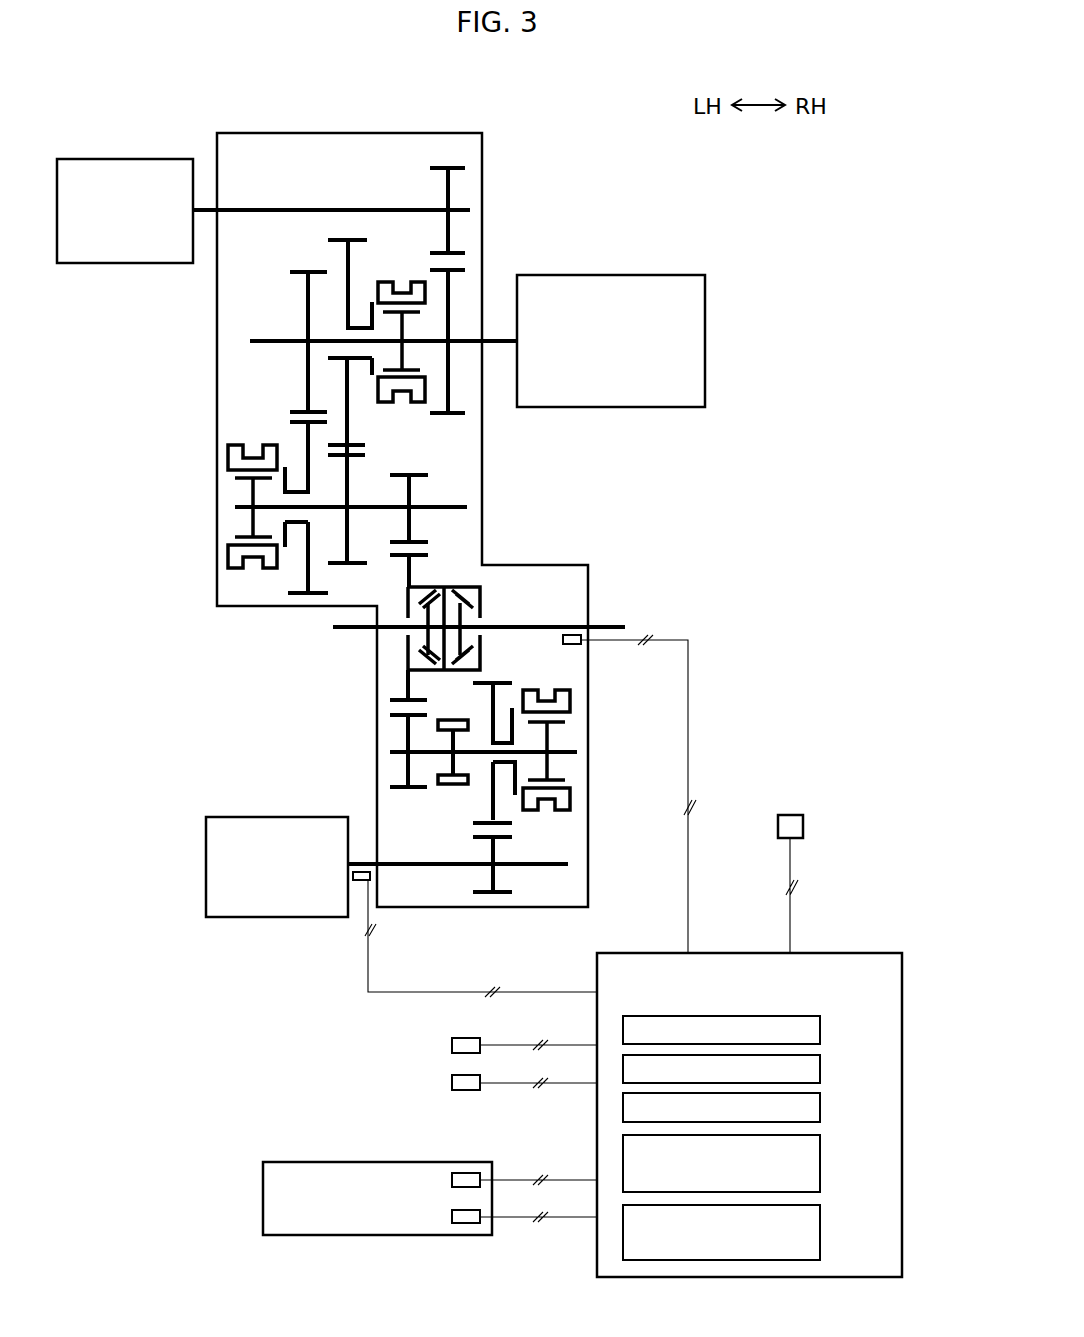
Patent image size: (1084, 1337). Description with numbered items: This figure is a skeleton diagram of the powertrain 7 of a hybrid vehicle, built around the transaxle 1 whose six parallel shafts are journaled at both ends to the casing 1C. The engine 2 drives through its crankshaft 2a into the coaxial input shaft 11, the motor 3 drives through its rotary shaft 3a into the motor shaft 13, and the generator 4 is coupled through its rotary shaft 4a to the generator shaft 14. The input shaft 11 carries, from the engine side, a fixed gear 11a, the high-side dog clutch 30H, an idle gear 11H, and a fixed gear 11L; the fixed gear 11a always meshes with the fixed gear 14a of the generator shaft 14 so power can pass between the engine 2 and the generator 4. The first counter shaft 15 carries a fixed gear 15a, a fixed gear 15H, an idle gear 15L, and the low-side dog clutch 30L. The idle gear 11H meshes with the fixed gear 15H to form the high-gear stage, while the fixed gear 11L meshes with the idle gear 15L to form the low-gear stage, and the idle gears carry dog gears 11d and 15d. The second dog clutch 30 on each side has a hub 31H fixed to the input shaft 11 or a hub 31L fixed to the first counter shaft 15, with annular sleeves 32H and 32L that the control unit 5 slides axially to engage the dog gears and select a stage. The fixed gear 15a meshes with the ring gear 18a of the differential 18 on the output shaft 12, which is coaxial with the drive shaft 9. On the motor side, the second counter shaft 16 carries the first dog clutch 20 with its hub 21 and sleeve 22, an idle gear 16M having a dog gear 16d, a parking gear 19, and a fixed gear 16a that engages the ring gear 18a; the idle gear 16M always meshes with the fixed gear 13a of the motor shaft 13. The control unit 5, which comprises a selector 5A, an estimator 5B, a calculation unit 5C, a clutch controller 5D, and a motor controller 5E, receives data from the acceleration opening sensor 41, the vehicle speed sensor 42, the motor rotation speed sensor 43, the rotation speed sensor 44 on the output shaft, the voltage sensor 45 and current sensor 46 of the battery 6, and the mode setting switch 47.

The transaxle 1 is at (590, 485).
The casing 1C is at (241, 132).
The engine 2 is at (707, 341).
The crankshaft 2a is at (492, 345).
The motor 3 is at (247, 816).
The rotary shaft of the motor 3a is at (353, 858).
The generator 4 is at (103, 158).
The rotary shaft of the generator 4a is at (203, 208).
The control unit 5 is at (771, 1115).
The selector 5A is at (822, 1031).
The estimator 5B is at (822, 1069).
The calculation unit 5C is at (822, 1108).
The clutch controller 5D is at (822, 1164).
The motor controller 5E is at (822, 1233).
The battery 6 is at (290, 1161).
The powertrain 7 is at (661, 197).
The drive shaft 9 is at (607, 622).
The input shaft 11 is at (255, 339).
The idle gear 11H is at (347, 258).
The fixed gear 11L is at (307, 374).
The fixed gear 11a is at (455, 394).
The dog gear 11d is at (364, 377).
The output shaft 12 is at (557, 626).
The motor shaft 13 is at (430, 866).
The fixed gear 13a is at (497, 882).
The generator shaft 14 is at (297, 209).
The fixed gear 14a is at (452, 191).
The first counter shaft 15 is at (455, 508).
The fixed gear 15H is at (340, 542).
The idle gear 15L is at (307, 440).
The fixed gear 15a is at (413, 485).
The dog gear 15d is at (292, 537).
The second counter shaft 16 is at (568, 746).
The fixed gear 16a is at (407, 732).
The dog gear 16d is at (514, 710).
The idle gear 16M is at (492, 800).
The differential 18 is at (511, 586).
The ring gear 18a is at (407, 683).
The parking gear 19 is at (448, 783).
The first dog clutch 20 is at (584, 793).
The hub 21 is at (565, 760).
The sleeve 22 is at (572, 798).
The second dog clutch 30 is at (341, 367).
The high-side dog clutch 30H is at (472, 273).
The low-side dog clutch 30L is at (197, 546).
The hub 31H is at (403, 328).
The hub 31L is at (250, 522).
The sleeve 32H is at (417, 403).
The sleeve 32L is at (228, 558).
The acceleration opening sensor 41 is at (450, 1046).
The vehicle speed sensor 42 is at (450, 1084).
The motor rotation speed sensor 43 is at (357, 883).
The rotation speed sensor 44 is at (573, 646).
The voltage sensor 45 is at (467, 1172).
The current sensor 46 is at (467, 1224).
The mode setting switch 47 is at (807, 826).